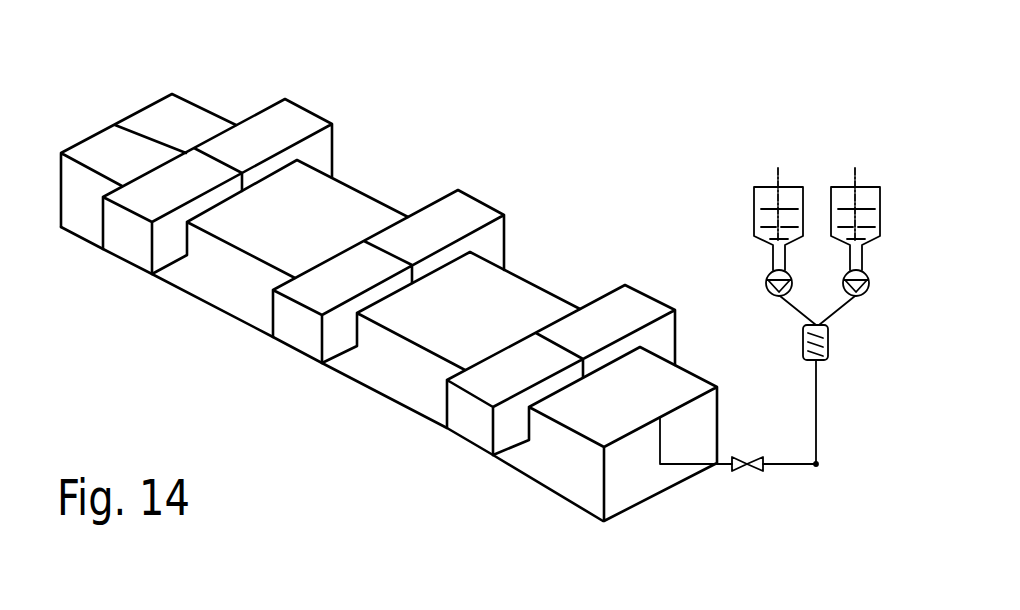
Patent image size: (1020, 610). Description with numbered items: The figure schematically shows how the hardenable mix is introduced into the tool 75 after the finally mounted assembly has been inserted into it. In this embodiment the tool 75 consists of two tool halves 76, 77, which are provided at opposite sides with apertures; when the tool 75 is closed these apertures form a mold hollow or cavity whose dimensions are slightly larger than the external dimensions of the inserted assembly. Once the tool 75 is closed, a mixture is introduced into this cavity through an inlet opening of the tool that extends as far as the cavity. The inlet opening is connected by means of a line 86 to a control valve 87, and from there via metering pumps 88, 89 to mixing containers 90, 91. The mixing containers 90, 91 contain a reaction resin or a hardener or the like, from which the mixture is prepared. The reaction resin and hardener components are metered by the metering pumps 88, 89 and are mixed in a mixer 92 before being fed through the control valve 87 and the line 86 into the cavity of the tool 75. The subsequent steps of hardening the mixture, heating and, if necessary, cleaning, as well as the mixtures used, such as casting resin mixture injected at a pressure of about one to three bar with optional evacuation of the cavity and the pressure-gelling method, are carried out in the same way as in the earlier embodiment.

The tool 75 is at (389, 278).
The tool half 76 is at (503, 298).
The tool half 77 is at (222, 281).
The line 86 is at (817, 464).
The control valve 87 is at (755, 472).
The metering pump 88 is at (766, 278).
The metering pump 89 is at (862, 292).
The mixing container 90 is at (767, 195).
The mixing container 91 is at (867, 195).
The mixer 92 is at (828, 340).